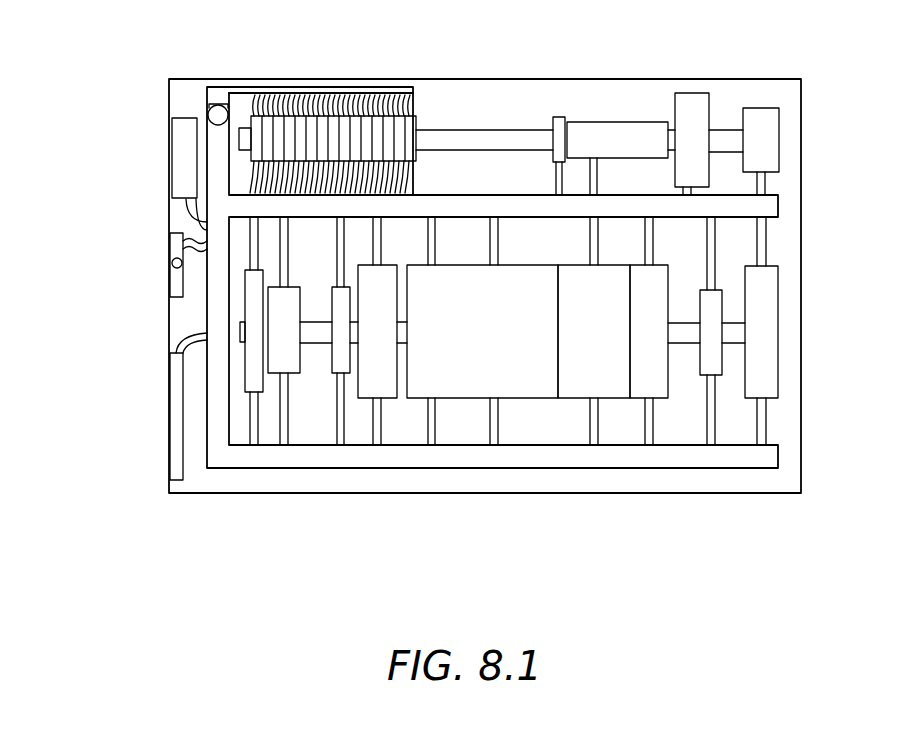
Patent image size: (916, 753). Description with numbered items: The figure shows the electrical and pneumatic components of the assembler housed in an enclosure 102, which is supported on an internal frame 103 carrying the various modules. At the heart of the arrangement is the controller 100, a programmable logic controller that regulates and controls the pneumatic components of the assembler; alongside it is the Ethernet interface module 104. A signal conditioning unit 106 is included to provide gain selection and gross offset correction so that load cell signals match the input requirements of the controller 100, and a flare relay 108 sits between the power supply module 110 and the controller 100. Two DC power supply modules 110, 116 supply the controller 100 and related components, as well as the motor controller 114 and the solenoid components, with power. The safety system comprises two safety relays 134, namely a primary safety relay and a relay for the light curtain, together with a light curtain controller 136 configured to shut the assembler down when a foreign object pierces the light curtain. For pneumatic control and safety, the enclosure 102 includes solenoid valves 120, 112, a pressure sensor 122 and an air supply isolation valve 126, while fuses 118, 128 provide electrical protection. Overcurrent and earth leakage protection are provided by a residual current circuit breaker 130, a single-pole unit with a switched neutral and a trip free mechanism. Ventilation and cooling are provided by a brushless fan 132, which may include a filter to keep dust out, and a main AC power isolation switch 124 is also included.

The controller 100 is at (523, 399).
The enclosure 102 is at (805, 88).
The chassis frame 103 is at (213, 395).
The Ethernet interface module 104 is at (582, 399).
The signal conditioning unit 106 is at (658, 399).
The flare relay 108 is at (720, 376).
The DC power supply module 110 is at (777, 352).
The solenoid valve 112 is at (758, 108).
The motor controller 114 is at (693, 93).
The DC power supply module 116 is at (615, 122).
The fuse 118 is at (560, 117).
The solenoid valve 120 is at (423, 111).
The pressure sensor 122 is at (213, 106).
The main AC power isolation switch 124 is at (170, 115).
The isolation valve 126 is at (170, 232).
The fuse 128 is at (336, 375).
The residual current circuit breaker 130 is at (246, 394).
The fan 132 is at (177, 455).
The safety relays 134 is at (267, 297).
The light curtain controller 136 is at (360, 400).